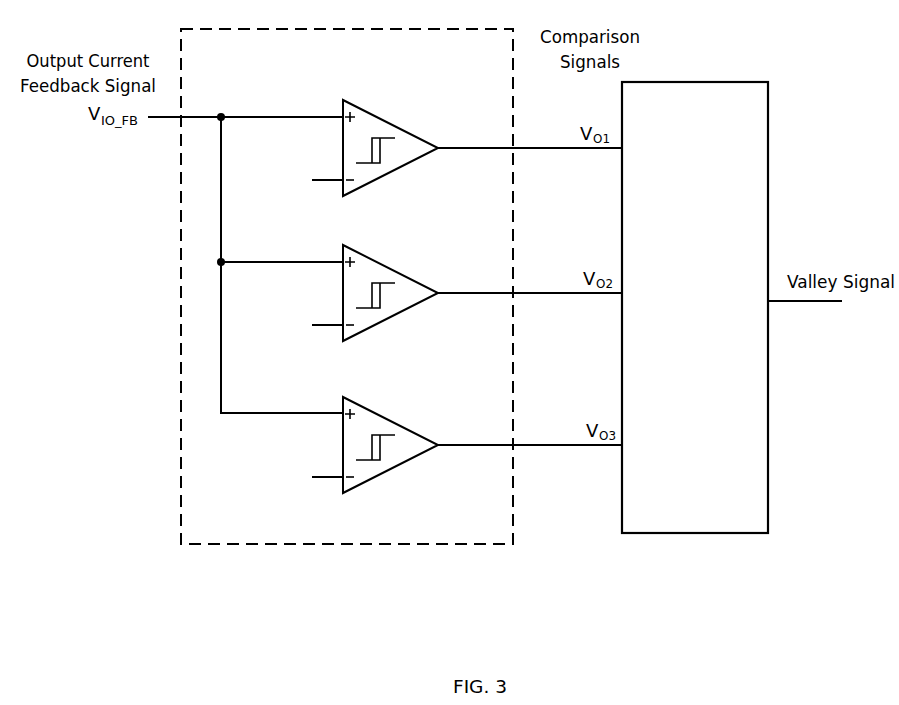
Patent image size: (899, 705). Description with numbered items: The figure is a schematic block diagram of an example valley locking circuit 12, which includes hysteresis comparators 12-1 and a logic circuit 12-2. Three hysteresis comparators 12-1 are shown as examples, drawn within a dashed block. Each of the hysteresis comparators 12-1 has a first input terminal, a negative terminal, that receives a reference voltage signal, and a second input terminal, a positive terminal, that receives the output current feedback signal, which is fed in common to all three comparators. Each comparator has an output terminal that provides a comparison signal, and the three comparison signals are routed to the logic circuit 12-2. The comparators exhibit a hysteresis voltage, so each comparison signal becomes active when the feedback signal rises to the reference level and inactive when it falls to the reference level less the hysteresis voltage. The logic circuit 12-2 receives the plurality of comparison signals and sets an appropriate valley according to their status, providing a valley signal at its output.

The comparison circuit 12 is at (495, 286).
The hysteresis comparators 12-1 is at (486, 530).
The logic circuit 12-2 is at (709, 515).